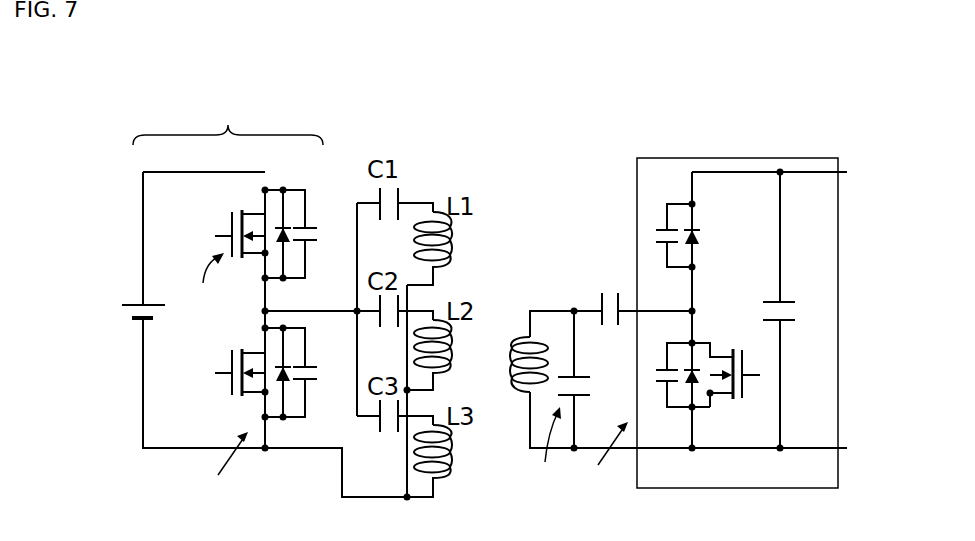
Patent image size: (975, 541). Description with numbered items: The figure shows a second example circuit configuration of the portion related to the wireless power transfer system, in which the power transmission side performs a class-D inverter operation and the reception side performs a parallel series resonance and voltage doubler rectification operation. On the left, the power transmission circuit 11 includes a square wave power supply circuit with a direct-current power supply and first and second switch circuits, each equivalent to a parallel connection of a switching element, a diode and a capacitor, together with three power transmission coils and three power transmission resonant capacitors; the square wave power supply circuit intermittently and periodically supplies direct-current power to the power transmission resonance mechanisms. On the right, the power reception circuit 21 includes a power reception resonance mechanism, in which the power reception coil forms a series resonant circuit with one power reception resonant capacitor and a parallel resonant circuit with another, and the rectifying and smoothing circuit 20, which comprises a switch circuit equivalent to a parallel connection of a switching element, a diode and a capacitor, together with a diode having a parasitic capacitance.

The power transmission circuit 11 is at (133, 85).
The power reception circuit 21 is at (510, 85).
The rectifying and smoothing circuit 20 is at (838, 158).